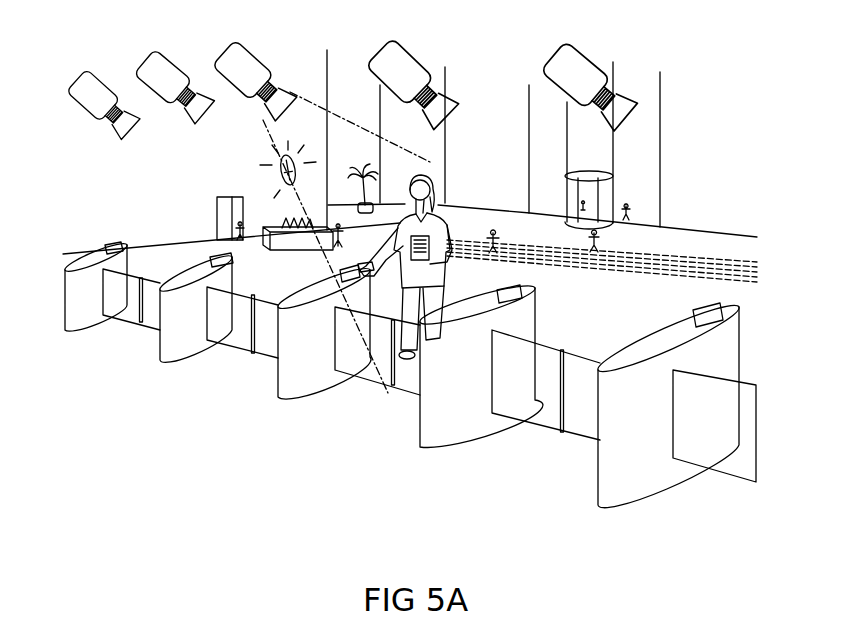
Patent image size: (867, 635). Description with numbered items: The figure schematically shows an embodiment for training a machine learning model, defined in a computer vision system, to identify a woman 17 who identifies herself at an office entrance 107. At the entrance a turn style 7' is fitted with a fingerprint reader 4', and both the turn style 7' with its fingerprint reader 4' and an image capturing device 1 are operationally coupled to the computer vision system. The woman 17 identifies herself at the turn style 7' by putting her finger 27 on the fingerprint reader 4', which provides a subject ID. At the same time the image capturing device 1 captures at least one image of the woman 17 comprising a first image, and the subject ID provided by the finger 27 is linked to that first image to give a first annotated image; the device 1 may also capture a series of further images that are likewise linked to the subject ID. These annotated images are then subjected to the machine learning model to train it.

The image capturing device 1 is at (256, 52).
The office entrance 107 is at (410, 136).
The finger 27 is at (362, 267).
The fingerprint reader 4' is at (332, 268).
The woman 17 is at (448, 258).
The turn style 7' is at (324, 326).